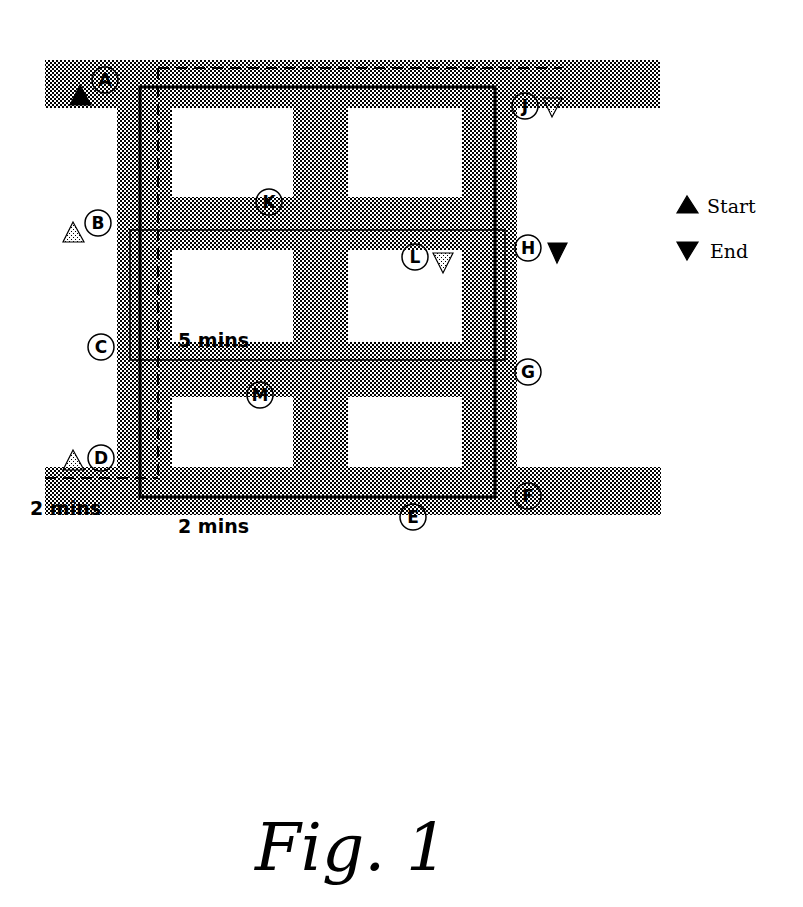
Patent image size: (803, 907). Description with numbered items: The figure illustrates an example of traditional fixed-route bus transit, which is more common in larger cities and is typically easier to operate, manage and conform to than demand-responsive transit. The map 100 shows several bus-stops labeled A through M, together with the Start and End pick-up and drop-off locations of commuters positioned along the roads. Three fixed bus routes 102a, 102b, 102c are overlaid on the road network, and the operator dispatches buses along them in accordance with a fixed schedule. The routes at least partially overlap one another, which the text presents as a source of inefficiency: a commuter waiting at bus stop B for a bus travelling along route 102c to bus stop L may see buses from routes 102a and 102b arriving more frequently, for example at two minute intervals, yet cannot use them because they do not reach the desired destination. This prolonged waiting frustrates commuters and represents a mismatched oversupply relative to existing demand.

The map 100 is at (358, 666).
The bus route 102a is at (211, 72).
The bus route 102b is at (358, 87).
The bus route 102c is at (357, 213).